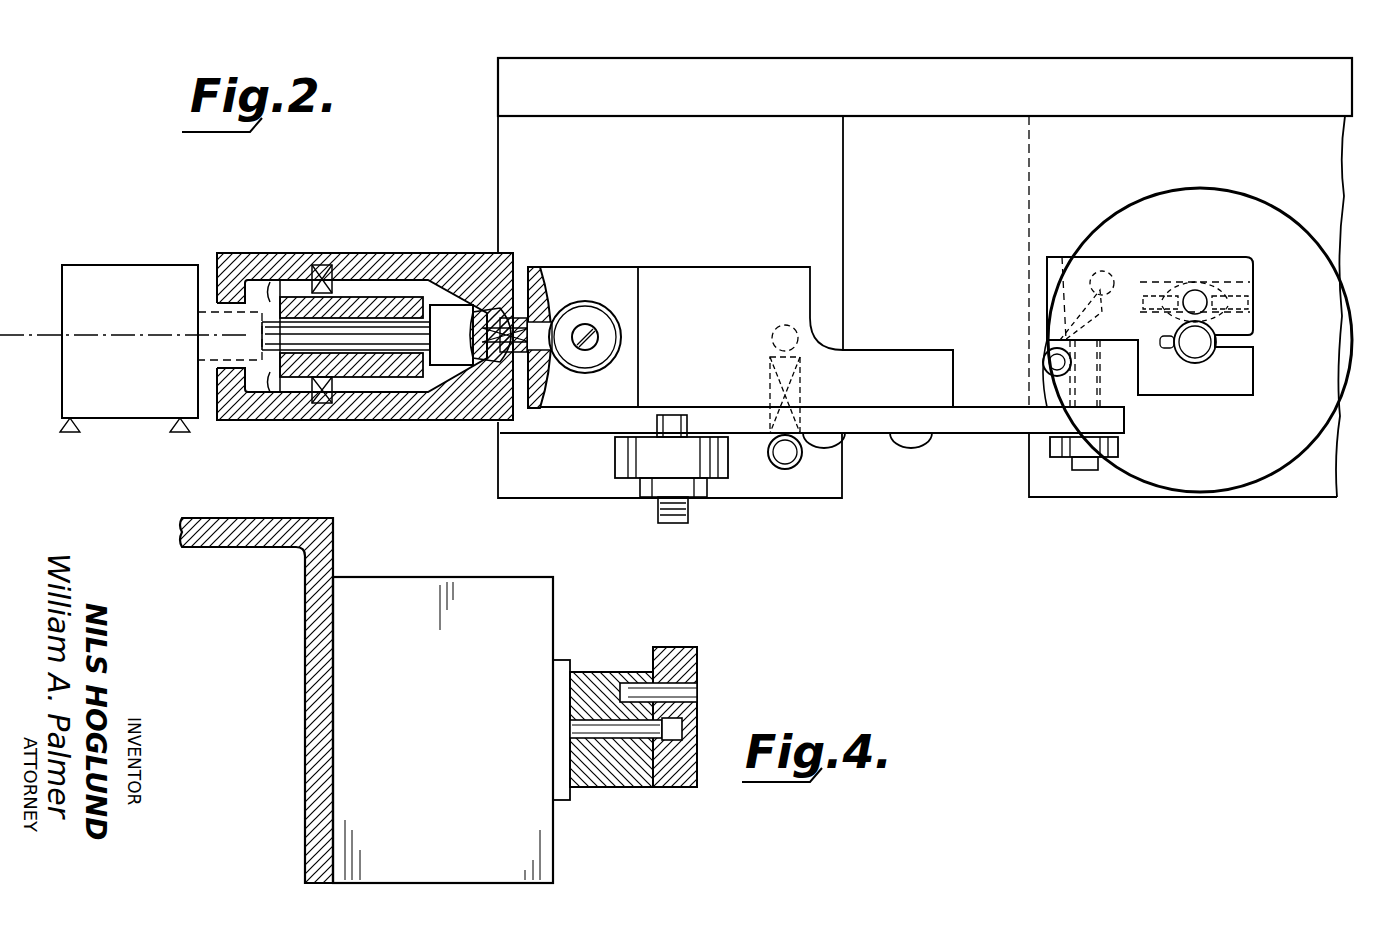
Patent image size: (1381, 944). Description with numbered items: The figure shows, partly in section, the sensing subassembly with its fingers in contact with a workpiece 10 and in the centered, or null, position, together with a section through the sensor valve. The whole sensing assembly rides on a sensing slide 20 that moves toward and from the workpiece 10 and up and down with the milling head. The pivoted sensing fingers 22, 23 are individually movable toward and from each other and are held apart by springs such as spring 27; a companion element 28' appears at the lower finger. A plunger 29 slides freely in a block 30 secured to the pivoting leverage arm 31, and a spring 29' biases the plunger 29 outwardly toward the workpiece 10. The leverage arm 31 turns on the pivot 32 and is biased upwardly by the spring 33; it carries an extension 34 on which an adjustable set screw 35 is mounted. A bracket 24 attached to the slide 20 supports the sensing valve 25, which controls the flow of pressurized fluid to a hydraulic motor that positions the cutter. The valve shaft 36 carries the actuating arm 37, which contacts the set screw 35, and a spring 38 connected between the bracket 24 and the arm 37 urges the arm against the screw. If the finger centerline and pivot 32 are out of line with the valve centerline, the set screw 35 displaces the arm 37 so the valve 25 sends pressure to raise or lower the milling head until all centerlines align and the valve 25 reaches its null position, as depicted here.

In FIG. 2, the workpiece 10 is at (135, 266).
In FIG. 2, the sensing slide 20 is at (1079, 58).
In FIG. 2, the sensing finger 22 is at (212, 260).
In FIG. 2, the sensing finger 23 is at (251, 422).
In FIG. 2, the bracket 24 is at (1040, 149).
In FIG. 4, the bracket 24 is at (305, 645).
In FIG. 2, the sensing valve 25 is at (1234, 168).
In FIG. 4, the sensing valve 25 is at (498, 578).
In FIG. 2, the spring 27 is at (324, 256).
In FIG. 2, the lower screw 28' is at (308, 422).
In FIG. 2, the plunger 29 is at (271, 300).
In FIG. 2, the spring 29' is at (511, 304).
In FIG. 2, the block 30 is at (386, 296).
In FIG. 2, the leverage arm 31 is at (902, 352).
In FIG. 2, the pivot 32 is at (585, 328).
In FIG. 2, the spring 33 is at (800, 392).
In FIG. 2, the extension 34 is at (980, 408).
In FIG. 2, the set screw 35 is at (690, 508).
In FIG. 4, the shaft 36 is at (688, 726).
In FIG. 2, the actuating arm 37 is at (1160, 258).
In FIG. 4, the actuating arm 37 is at (694, 658).
In FIG. 2, the spring 38 is at (1054, 258).